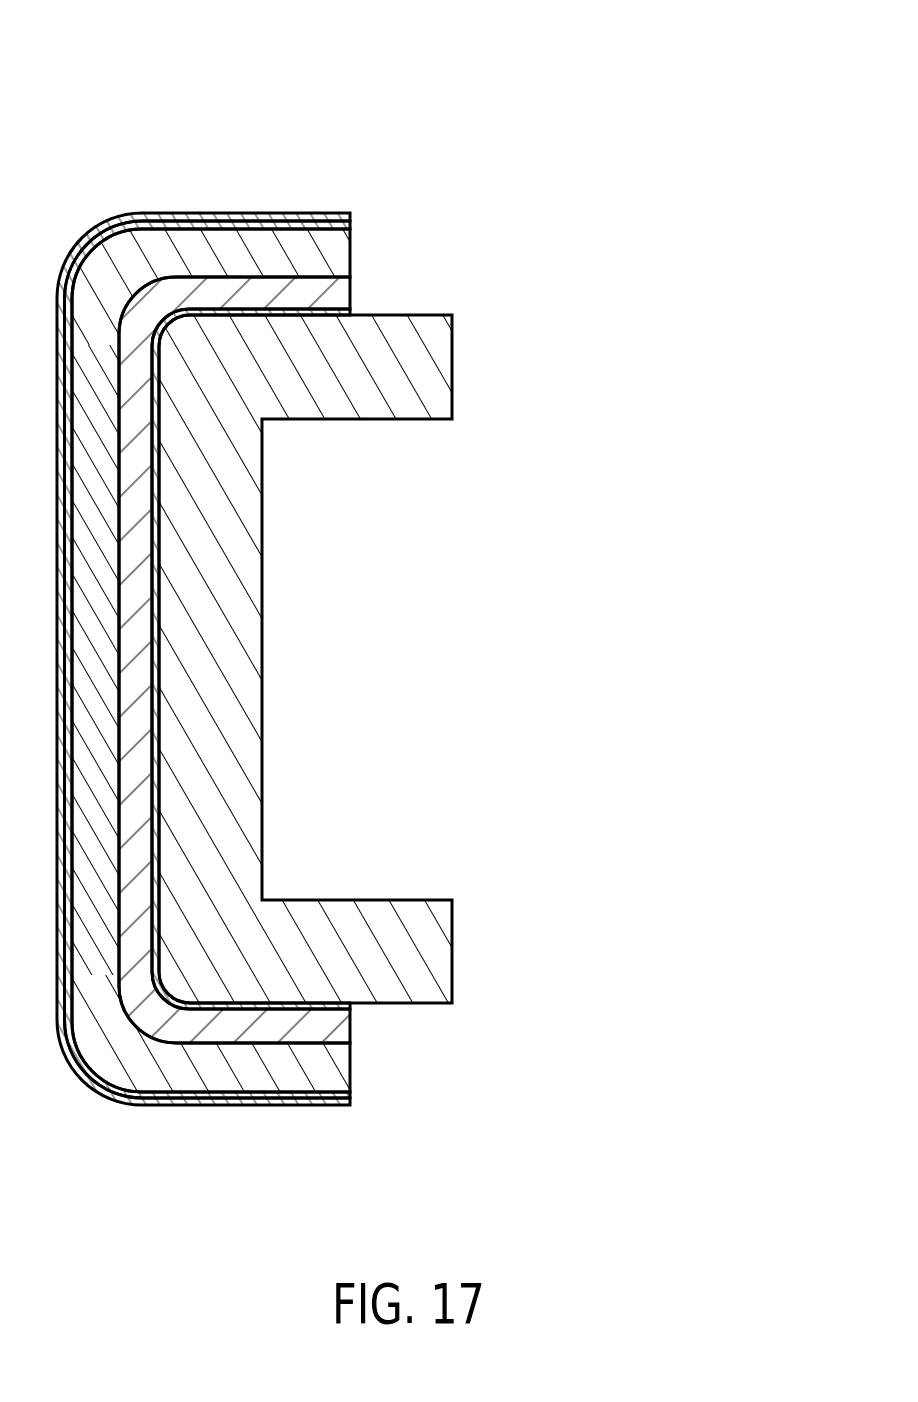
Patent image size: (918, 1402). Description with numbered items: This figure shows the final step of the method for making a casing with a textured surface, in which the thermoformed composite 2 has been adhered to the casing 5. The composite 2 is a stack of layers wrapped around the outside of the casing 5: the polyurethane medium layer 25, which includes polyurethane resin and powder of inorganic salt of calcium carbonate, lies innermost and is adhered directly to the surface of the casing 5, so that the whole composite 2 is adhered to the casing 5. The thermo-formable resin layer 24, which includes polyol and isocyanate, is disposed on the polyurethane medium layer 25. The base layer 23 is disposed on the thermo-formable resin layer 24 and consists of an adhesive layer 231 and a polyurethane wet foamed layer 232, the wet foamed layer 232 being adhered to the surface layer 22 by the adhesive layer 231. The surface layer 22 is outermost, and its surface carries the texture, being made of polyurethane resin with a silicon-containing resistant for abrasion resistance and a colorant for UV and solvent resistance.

The composite 2 is at (466, 112).
The surface layer 22 is at (352, 217).
The base layer 23 is at (488, 202).
The adhesive layer 231 is at (350, 223).
The polyurethane wet foamed layer 232 is at (332, 260).
The thermo-formable resin layer 24 is at (340, 300).
The polyurethane medium layer 25 is at (350, 314).
The casing 5 is at (247, 665).